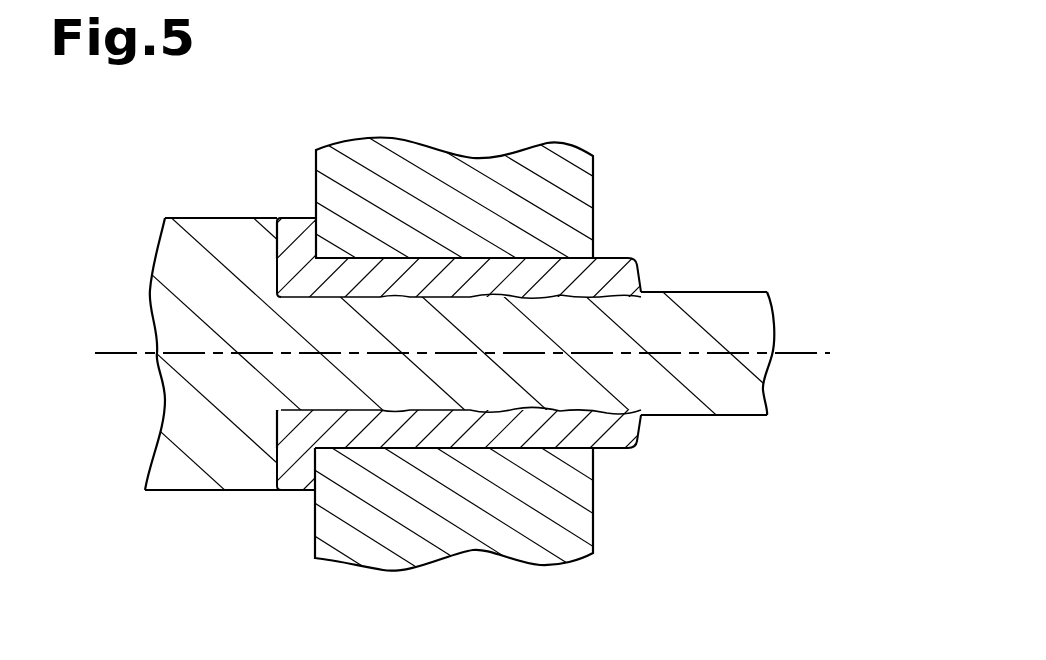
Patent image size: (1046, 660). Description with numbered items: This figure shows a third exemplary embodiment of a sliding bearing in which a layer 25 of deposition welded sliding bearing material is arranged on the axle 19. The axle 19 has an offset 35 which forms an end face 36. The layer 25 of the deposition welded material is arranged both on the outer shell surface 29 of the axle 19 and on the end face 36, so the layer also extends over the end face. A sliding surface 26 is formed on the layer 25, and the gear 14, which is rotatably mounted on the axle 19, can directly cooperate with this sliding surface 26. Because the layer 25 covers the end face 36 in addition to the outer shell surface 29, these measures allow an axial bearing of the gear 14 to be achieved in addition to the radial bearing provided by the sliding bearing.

The gear 14 is at (540, 162).
The axle 19 is at (652, 330).
The layer 25 is at (280, 244).
The sliding surface 26 is at (316, 244).
The outer shell surface 29 is at (736, 289).
The offset 35 is at (215, 240).
The end face 36 is at (293, 217).